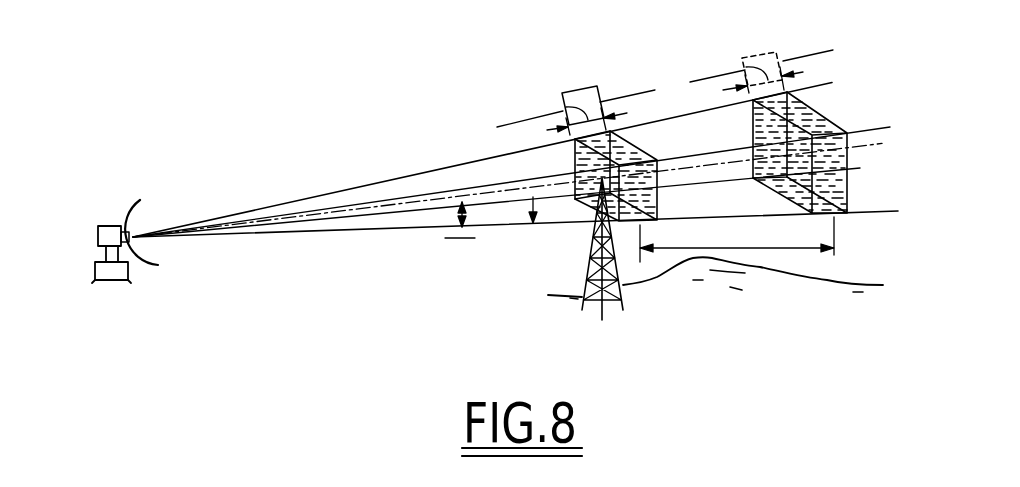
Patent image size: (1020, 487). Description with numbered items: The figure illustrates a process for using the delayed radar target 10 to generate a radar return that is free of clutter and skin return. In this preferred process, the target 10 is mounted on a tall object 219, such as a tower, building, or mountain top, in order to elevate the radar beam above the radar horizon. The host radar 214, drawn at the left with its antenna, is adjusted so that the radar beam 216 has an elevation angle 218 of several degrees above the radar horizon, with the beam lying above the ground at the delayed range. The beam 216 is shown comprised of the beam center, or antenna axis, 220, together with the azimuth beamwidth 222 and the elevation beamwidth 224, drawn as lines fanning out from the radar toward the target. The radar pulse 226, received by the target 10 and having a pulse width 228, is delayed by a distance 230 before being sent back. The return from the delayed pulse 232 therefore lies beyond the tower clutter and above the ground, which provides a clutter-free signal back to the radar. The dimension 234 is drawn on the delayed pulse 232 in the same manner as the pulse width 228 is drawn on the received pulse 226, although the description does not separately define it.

The delayed radar target 10 is at (575, 164).
The host radar 214 is at (98, 234).
The radar beam 216 is at (316, 194).
The elevation angle 218 is at (455, 228).
The tall object 219 is at (625, 292).
The beam center (antenna axis) 220 is at (693, 167).
The azimuth beamwidth 222 is at (532, 197).
The elevation beamwidth 224 is at (523, 226).
The radar pulse 226 is at (578, 92).
The pulse width 228 is at (563, 108).
The distance 230 is at (753, 248).
The delayed pulse 232 is at (753, 50).
The second element thickness 234 is at (745, 68).